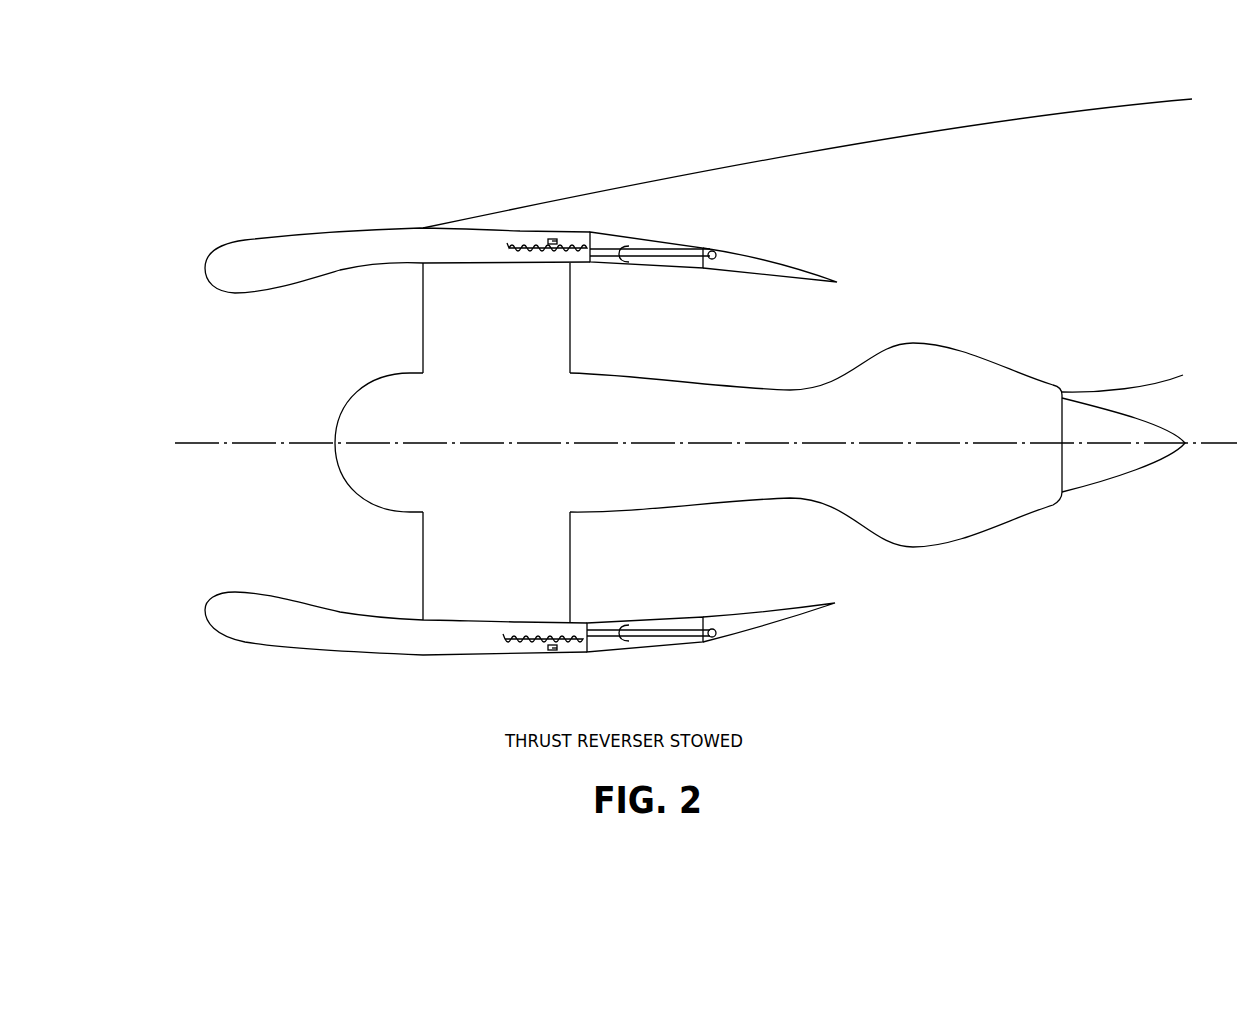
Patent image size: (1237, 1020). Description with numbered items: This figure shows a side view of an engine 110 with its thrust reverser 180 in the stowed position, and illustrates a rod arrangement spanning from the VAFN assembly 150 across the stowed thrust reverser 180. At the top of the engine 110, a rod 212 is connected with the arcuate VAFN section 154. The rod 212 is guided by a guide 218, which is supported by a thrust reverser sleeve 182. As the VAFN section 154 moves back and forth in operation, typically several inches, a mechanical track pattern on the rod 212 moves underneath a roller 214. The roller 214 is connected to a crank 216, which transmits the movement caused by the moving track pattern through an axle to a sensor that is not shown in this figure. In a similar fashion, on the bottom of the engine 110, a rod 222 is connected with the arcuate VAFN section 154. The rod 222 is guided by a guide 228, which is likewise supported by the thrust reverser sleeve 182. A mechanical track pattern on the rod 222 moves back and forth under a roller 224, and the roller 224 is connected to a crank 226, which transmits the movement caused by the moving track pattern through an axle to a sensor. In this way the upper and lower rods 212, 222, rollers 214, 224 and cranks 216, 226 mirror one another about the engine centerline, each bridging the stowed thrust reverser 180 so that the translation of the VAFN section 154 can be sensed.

The engine 110 is at (337, 160).
The VAFN assembly 150 is at (792, 230).
The arcuate VAFN section 154 is at (732, 273).
The thrust reverser 180 is at (686, 216).
The thrust reverser sleeve 182 is at (630, 267).
The rod 212 is at (515, 252).
The roller 214 is at (553, 238).
The crank 216 is at (557, 238).
The guide 218 is at (622, 256).
The rod 222 is at (512, 633).
The roller 224 is at (548, 648).
The crank 226 is at (556, 648).
The guide 228 is at (622, 632).